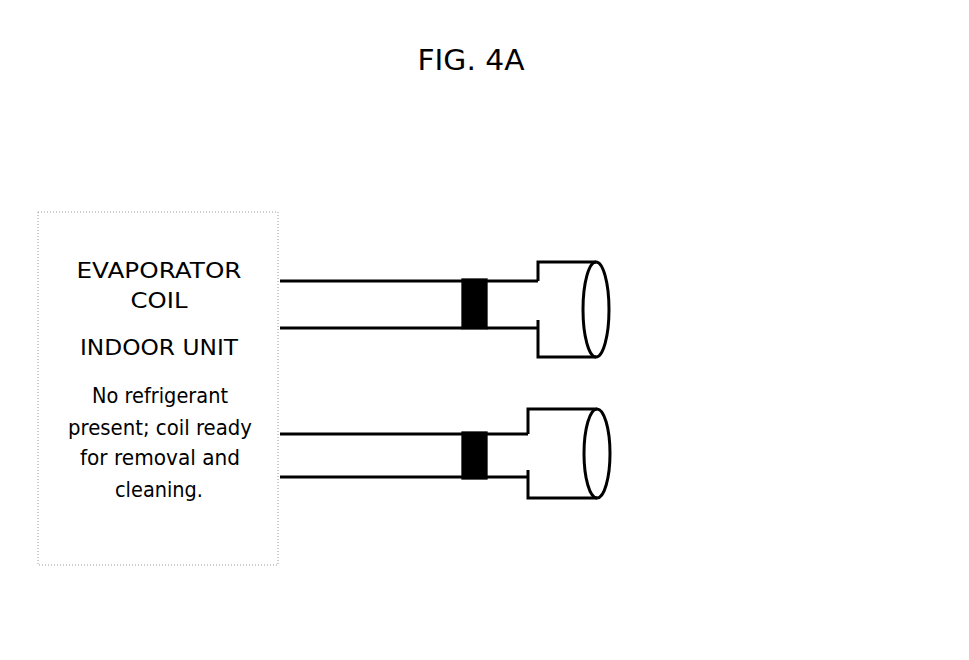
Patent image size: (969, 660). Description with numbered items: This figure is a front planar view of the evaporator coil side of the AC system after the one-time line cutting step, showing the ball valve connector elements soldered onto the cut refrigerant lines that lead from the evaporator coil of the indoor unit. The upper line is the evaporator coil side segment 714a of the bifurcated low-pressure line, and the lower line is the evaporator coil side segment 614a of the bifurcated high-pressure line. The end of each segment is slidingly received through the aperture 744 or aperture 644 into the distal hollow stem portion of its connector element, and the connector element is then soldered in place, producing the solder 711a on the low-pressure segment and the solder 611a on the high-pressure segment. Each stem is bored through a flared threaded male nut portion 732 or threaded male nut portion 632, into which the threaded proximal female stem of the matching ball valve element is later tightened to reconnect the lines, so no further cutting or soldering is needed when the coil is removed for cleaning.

The evaporator coil side segment 714a is at (373, 280).
The solder 711a is at (481, 278).
The aperture 744 is at (514, 280).
The threaded male nut portion 732 is at (629, 297).
The evaporator coil side segment 614a is at (392, 479).
The solder 611a is at (479, 480).
The aperture 644 is at (515, 471).
The threaded male nut portion 632 is at (629, 447).